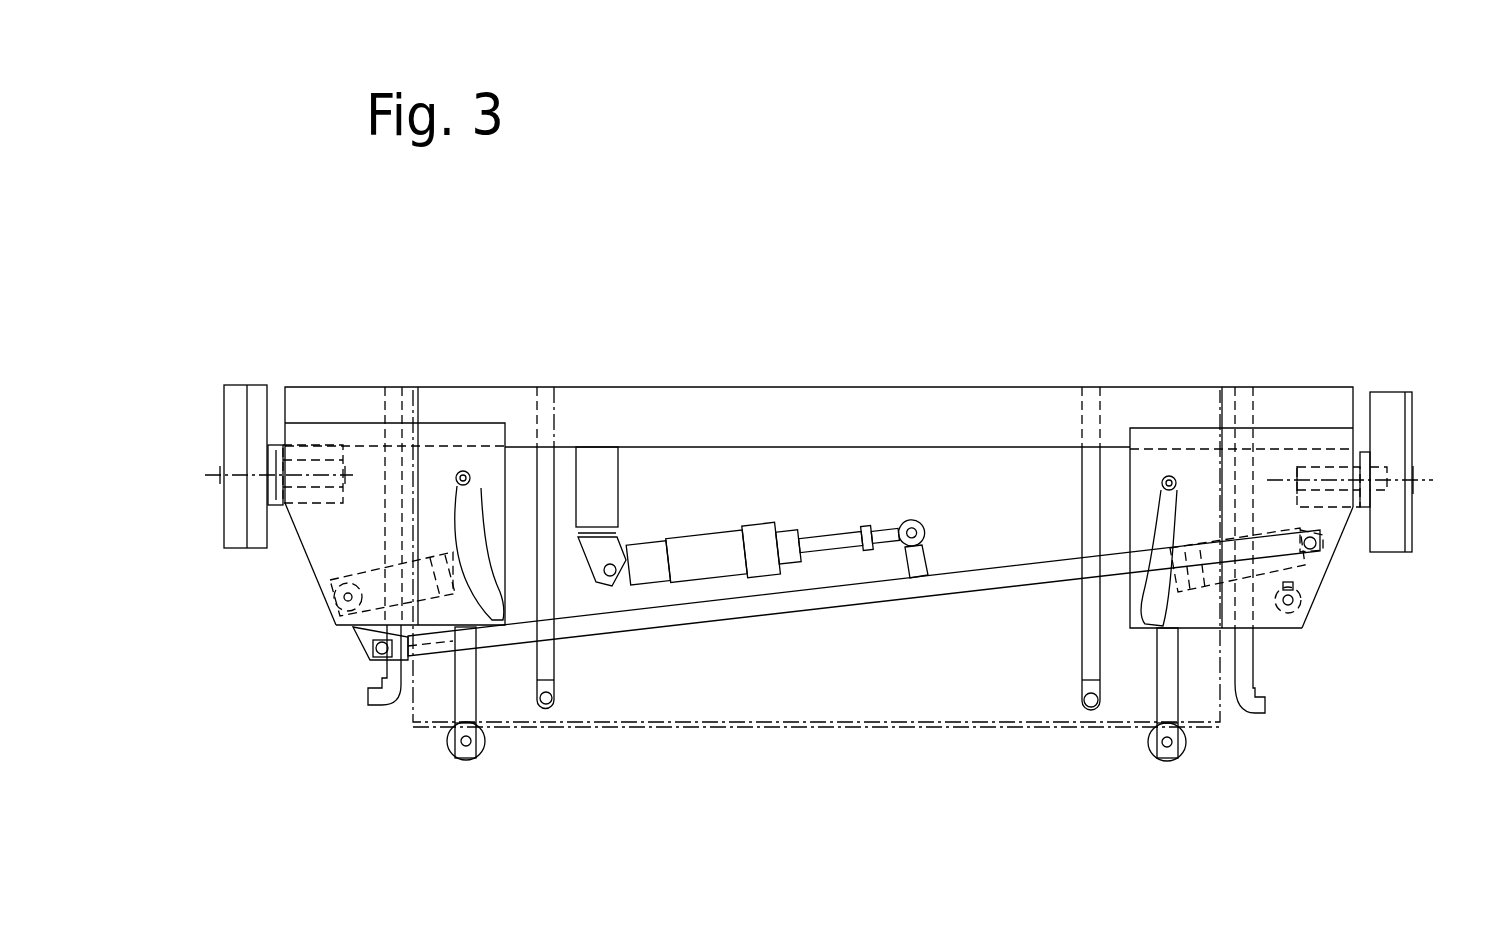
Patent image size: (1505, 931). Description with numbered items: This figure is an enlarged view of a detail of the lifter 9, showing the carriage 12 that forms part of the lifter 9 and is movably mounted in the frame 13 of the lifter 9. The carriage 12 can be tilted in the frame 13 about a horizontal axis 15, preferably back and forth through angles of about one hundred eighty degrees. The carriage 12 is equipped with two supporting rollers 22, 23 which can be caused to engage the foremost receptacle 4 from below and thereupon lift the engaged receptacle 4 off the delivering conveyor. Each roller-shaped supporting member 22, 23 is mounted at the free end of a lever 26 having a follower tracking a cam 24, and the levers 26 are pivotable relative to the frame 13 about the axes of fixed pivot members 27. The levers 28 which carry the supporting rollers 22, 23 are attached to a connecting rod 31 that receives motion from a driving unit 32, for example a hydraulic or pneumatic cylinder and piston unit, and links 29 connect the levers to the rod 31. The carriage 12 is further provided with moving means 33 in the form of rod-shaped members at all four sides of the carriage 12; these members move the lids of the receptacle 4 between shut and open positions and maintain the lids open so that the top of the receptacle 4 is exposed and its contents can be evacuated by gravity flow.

The receptacle 4 is at (797, 725).
The lifter 9 is at (886, 338).
The carriage 12 is at (1000, 380).
The frame 13 is at (225, 403).
The horizontal axis 15 is at (213, 473).
The supporting roller 22 is at (447, 742).
The supporting roller 23 is at (1187, 743).
The cam 24 is at (477, 480).
The lever 26 is at (467, 672).
The fixed pivot member 27 is at (327, 622).
The lever 28 is at (423, 570).
The link 29 is at (362, 638).
The connecting rod 31 is at (1000, 590).
The driving unit 32 is at (700, 547).
The moving means 33 is at (548, 705).